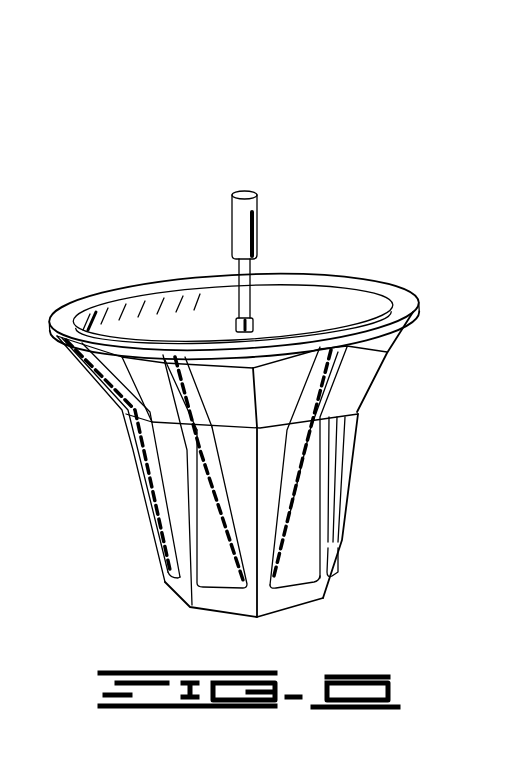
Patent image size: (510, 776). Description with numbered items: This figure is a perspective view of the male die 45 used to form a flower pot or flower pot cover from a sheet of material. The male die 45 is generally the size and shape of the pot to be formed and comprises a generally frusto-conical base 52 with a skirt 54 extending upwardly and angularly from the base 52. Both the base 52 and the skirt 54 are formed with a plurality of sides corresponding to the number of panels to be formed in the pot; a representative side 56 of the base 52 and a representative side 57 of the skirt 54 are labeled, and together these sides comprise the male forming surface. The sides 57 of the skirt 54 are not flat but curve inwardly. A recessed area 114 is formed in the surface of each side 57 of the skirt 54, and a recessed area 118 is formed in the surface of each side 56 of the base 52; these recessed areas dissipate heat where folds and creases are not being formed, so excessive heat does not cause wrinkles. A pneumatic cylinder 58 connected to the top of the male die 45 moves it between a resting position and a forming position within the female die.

The male die 45 is at (97, 245).
The base 52 is at (142, 510).
The skirt 54 is at (393, 286).
The side of the base 56 is at (332, 457).
The side of the skirt 57 is at (350, 378).
The pneumatic cylinder 58 is at (257, 232).
The recessed area 114 is at (312, 400).
The recessed area 118 is at (300, 522).